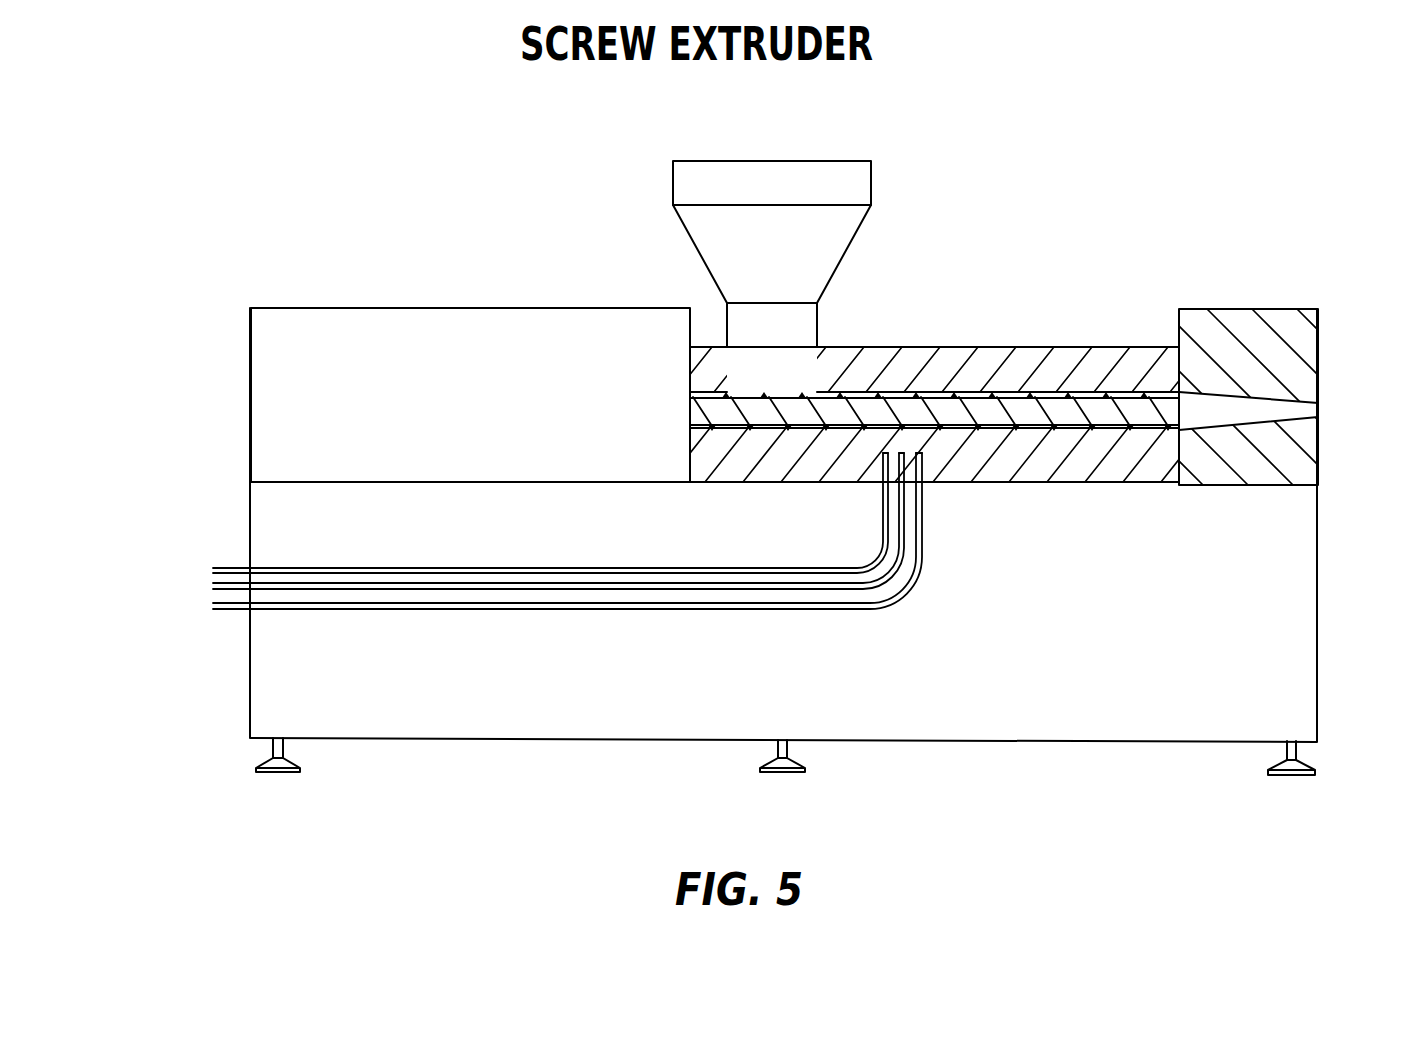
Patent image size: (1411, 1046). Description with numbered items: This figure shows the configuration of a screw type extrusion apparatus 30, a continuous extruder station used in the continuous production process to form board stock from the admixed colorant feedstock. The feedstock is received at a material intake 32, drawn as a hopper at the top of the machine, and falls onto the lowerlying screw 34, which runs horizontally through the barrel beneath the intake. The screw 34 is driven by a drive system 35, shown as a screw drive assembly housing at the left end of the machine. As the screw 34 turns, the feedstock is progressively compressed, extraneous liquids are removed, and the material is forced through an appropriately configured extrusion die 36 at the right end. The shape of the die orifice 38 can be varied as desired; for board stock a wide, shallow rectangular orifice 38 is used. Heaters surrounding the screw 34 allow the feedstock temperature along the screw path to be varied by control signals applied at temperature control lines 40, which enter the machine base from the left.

The screw drive extruder 30 is at (172, 295).
The material intake 32 is at (832, 160).
The screw 34 is at (1032, 347).
The drive system 35 is at (548, 308).
The extrusion die 36 is at (1280, 308).
The die orifice 38 is at (1318, 410).
The temperature control lines 40 is at (210, 550).